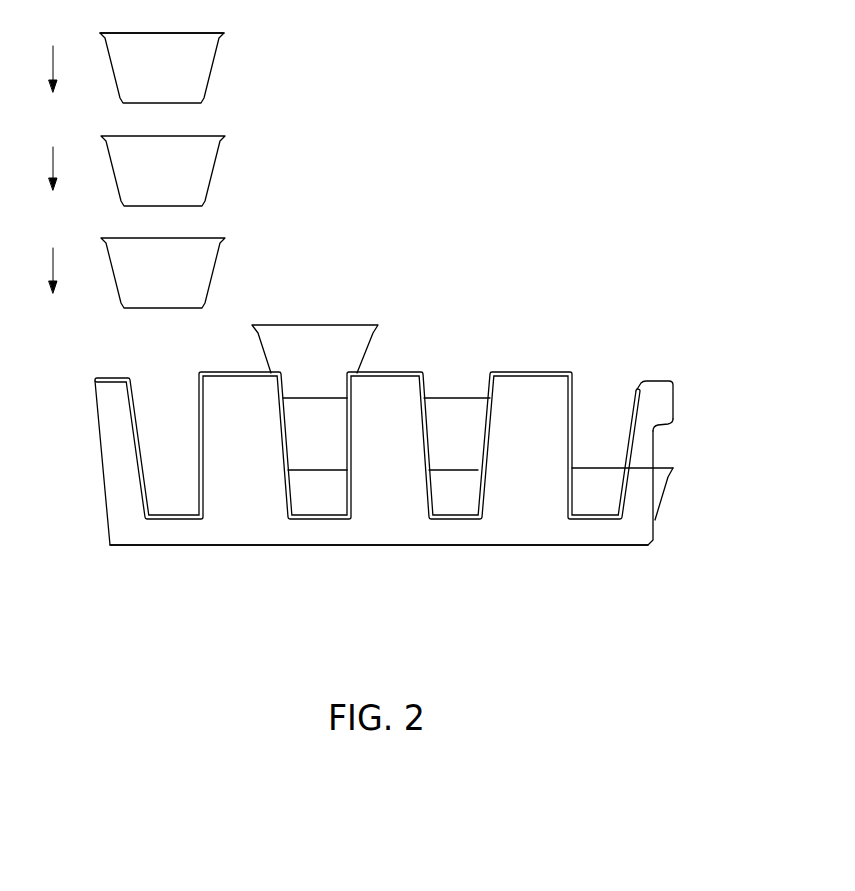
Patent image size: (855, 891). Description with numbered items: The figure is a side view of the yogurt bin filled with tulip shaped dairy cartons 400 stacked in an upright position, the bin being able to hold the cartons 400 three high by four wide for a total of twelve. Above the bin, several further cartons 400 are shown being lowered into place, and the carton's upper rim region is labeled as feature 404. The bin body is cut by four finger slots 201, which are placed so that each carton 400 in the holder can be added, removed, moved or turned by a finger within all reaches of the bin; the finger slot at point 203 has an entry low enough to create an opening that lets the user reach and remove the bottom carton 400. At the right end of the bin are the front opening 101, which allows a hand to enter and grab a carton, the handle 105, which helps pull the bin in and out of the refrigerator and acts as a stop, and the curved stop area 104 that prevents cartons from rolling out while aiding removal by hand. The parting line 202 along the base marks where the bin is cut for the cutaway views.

The tulip shaped carton 400 is at (214, 62).
The cup rim 404 is at (226, 36).
The finger slots 201 is at (588, 392).
The parting line 202 is at (490, 548).
The finger slot entry point 203 is at (598, 492).
The handle 105 is at (675, 398).
The front opening 101 is at (657, 434).
The stop area 104 is at (648, 544).